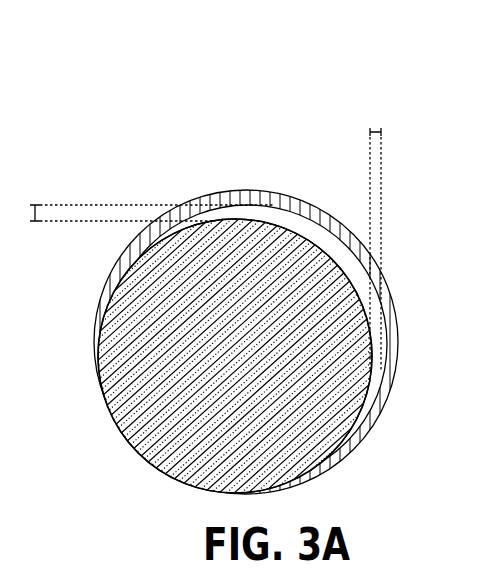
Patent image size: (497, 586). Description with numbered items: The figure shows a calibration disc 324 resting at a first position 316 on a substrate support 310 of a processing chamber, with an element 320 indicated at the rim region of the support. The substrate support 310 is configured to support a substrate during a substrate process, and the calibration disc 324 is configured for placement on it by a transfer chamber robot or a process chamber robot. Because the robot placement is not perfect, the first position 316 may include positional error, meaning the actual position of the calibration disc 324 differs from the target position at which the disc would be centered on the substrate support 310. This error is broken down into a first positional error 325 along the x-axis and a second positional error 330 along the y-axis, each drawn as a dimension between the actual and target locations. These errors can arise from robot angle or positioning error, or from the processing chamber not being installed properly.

The substrate support 310 is at (391, 297).
The first position 316 is at (125, 462).
The coating layer 320 is at (243, 208).
The calibration disc 324 is at (233, 322).
The first positional error 325 is at (370, 130).
The second positional error 330 is at (35, 205).